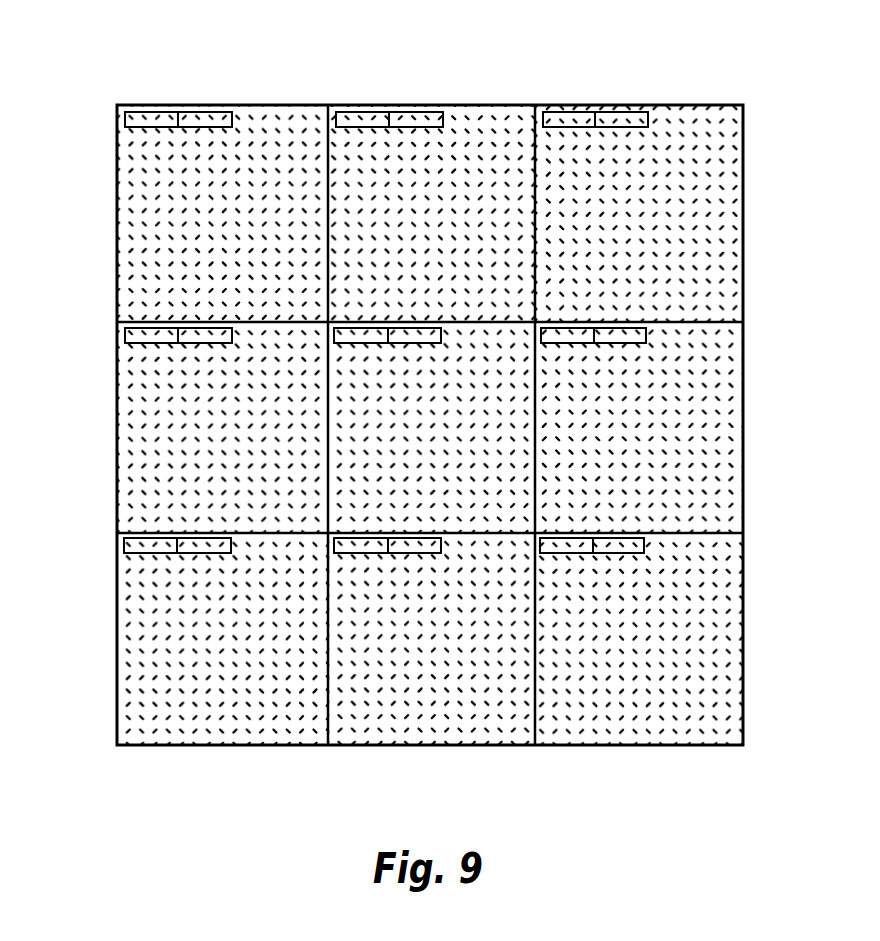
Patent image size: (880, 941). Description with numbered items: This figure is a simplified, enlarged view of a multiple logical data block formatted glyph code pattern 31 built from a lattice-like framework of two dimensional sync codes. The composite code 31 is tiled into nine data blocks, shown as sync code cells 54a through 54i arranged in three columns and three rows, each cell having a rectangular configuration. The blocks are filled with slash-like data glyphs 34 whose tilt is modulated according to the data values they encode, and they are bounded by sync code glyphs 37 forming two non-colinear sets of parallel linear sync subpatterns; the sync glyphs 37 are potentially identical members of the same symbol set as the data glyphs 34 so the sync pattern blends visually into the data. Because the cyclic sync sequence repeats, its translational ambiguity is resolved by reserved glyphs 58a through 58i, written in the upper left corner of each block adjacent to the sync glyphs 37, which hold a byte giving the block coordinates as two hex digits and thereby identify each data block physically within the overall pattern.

The self clocking glyph code 31 is at (432, 381).
The data glyph 34 is at (487, 135).
The sync code glyph 37 is at (537, 107).
The sync code cell 54a is at (257, 117).
The sync code cell 54i is at (710, 660).
The reserved glyph 58a is at (171, 110).
The reserved glyph 58i is at (627, 537).